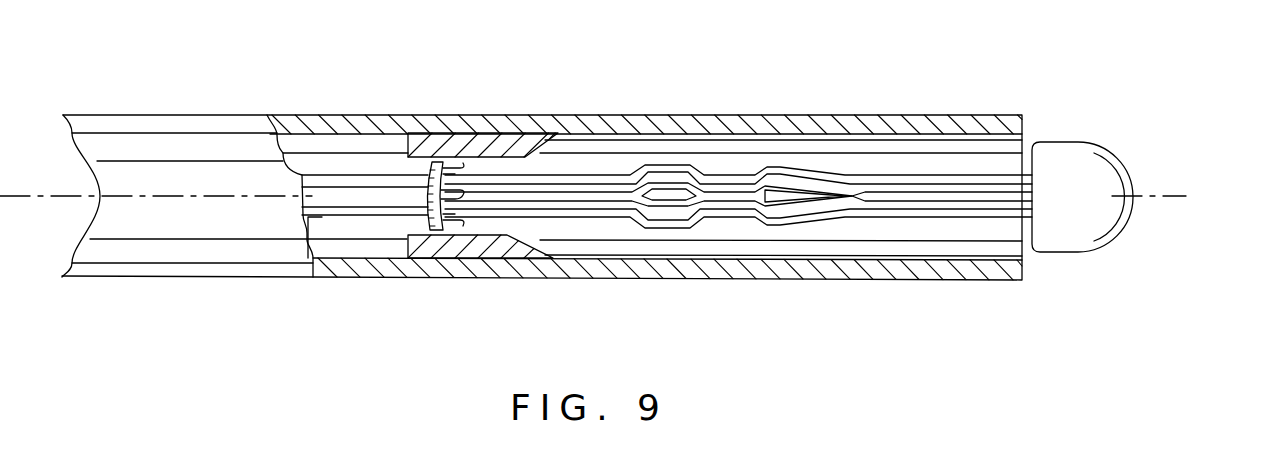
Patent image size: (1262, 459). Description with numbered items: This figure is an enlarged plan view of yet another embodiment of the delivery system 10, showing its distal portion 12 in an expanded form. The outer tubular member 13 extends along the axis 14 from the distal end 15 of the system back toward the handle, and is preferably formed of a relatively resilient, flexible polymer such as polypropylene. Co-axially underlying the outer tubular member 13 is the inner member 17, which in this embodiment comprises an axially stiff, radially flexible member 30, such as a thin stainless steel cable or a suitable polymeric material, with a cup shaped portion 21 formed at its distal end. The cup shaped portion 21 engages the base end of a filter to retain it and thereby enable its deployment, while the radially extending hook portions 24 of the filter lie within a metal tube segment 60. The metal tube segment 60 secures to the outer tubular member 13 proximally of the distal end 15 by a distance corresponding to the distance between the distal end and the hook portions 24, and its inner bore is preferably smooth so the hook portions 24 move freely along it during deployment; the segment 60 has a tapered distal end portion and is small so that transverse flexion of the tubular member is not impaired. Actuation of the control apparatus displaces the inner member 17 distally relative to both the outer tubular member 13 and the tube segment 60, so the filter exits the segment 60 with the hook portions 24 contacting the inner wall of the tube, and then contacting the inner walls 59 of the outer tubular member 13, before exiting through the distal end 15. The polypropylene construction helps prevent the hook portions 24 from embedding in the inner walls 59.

The delivery system 10 is at (614, 85).
The distal portion 12 is at (756, 97).
The outer tubular member 13 is at (180, 116).
The axis 14 is at (1180, 190).
The distal end 15 is at (1043, 266).
The inner member 17 is at (368, 190).
The cup shaped portion 21 is at (431, 158).
The hook portions 24 is at (462, 168).
The axially stiff, radially flexible member 30 is at (322, 218).
The inner walls 59 is at (872, 138).
The metal tube segment 60 is at (513, 253).